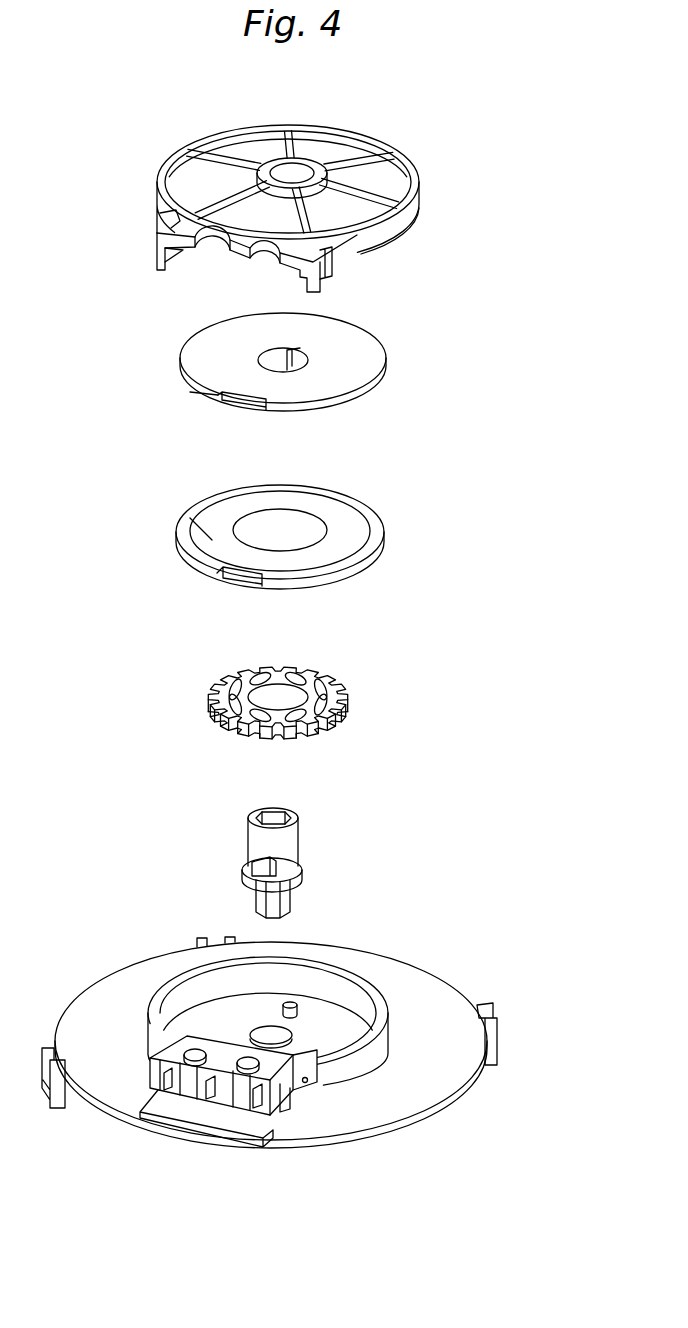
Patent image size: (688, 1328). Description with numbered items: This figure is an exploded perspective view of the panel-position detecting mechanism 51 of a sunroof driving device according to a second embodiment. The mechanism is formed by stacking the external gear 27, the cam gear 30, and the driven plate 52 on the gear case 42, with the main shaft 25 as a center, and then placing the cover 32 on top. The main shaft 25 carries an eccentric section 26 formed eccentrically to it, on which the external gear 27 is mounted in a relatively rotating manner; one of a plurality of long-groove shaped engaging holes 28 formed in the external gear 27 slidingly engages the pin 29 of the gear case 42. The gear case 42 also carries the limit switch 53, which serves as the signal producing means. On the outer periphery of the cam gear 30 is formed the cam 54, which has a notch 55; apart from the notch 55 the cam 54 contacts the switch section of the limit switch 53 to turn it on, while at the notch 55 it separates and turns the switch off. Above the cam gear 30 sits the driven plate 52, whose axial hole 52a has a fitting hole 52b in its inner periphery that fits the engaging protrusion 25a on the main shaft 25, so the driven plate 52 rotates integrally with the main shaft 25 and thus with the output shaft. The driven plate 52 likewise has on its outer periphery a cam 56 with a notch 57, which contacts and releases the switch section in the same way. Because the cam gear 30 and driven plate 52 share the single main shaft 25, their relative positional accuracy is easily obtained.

The cover 32 is at (418, 218).
The driven plate 52 is at (281, 384).
The axial hole 52a is at (272, 355).
The fitting hole 52b is at (300, 352).
The cam 56 is at (190, 391).
The notch 57 is at (240, 402).
The cam 54 is at (192, 516).
The cam gear 30 is at (294, 556).
The notch 55 is at (238, 585).
The engaging holes 28 is at (323, 690).
The external gear 27 is at (305, 688).
The main shaft 25 is at (265, 863).
The engaging protrusion 25a is at (256, 870).
The eccentric section 26 is at (303, 876).
The pin 29 is at (293, 1004).
The limit switch 53 is at (278, 1066).
The gear case 42 is at (269, 1057).
The panel-position detecting mechanism 51 is at (512, 502).